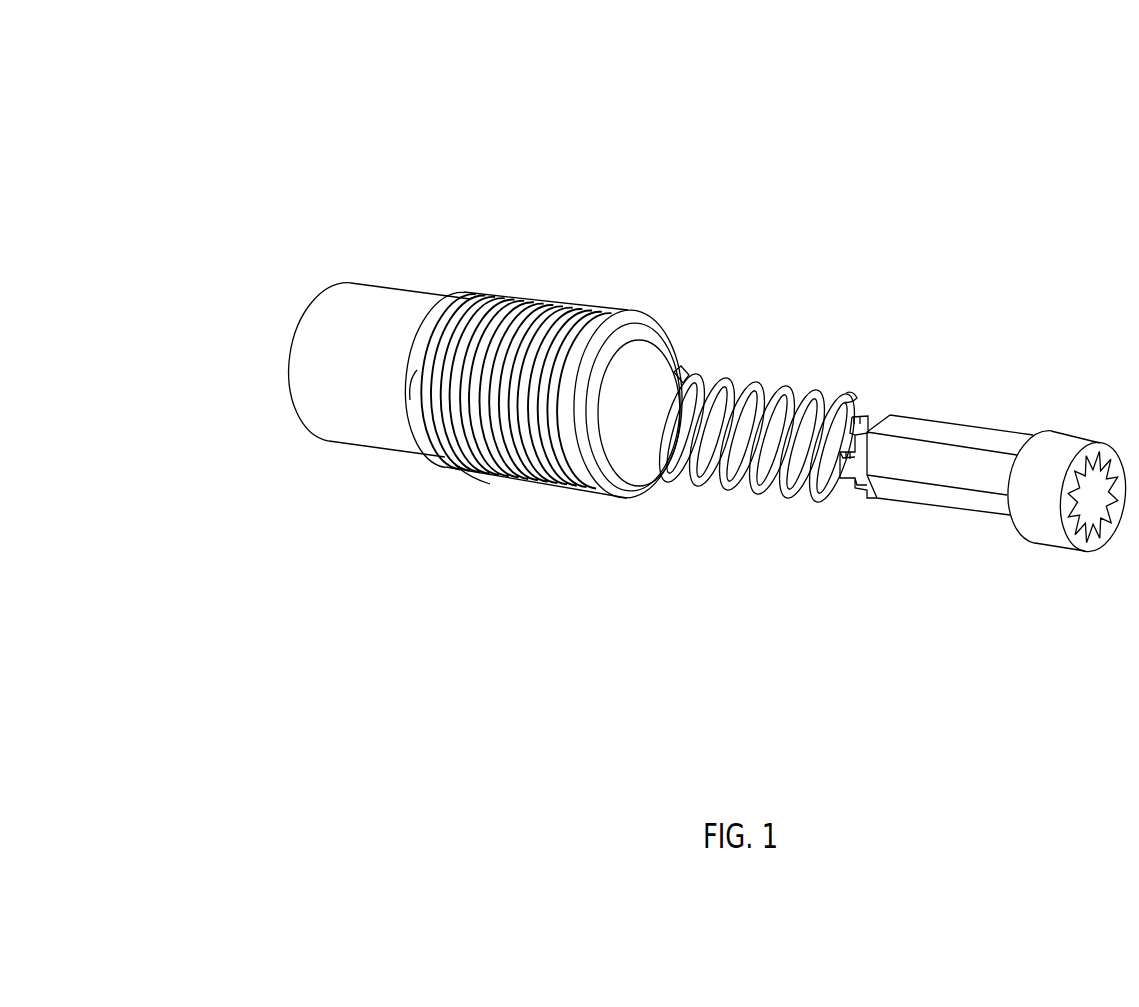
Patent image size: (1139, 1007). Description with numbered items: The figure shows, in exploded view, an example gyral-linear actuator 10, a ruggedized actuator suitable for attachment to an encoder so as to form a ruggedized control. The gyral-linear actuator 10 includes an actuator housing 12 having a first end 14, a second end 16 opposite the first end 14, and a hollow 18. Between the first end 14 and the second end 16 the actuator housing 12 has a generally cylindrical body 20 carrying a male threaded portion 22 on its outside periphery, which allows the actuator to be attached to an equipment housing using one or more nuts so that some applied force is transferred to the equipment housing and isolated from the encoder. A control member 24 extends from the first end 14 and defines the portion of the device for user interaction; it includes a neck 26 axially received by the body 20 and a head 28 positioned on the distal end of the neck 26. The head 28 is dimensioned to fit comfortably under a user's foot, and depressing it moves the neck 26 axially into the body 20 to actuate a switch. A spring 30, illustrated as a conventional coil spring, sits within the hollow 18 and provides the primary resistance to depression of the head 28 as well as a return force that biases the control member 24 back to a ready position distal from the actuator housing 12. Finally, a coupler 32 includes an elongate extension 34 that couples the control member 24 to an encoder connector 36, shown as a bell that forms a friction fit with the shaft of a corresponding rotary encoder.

The gyral-linear actuator 10 is at (435, 138).
The actuator housing 12 is at (582, 258).
The first end 14 is at (465, 283).
The second end 16 is at (686, 340).
The hollow 18 is at (631, 437).
The body 20 is at (521, 503).
The male threaded portion 22 is at (483, 482).
The control member 24 is at (268, 366).
The neck 26 is at (420, 383).
The head 28 is at (320, 293).
The spring 30 is at (727, 495).
The coupler 32 is at (980, 398).
The extension 34 is at (937, 507).
The encoder connector 36 is at (1057, 547).